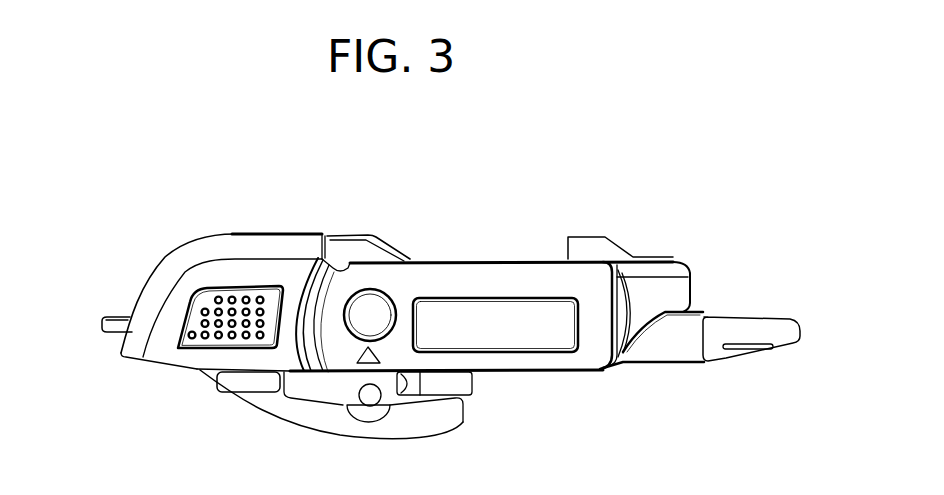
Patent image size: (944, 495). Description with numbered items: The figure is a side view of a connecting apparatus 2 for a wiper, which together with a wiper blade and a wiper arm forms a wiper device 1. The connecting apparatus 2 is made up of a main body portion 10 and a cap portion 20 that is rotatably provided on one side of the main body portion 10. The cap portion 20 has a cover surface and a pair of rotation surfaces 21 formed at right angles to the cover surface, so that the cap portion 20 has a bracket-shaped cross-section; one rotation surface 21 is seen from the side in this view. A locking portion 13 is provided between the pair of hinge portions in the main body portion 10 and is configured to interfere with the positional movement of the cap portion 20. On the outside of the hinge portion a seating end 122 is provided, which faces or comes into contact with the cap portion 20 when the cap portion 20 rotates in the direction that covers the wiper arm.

The wiper device 1 is at (748, 150).
The connecting apparatus for a wiper 2 is at (507, 212).
The main body portion 10 is at (531, 332).
The locking portion 13 is at (104, 333).
The cap portion 20 is at (200, 253).
The rotation surface 21 is at (163, 348).
The seating end 122 is at (257, 383).